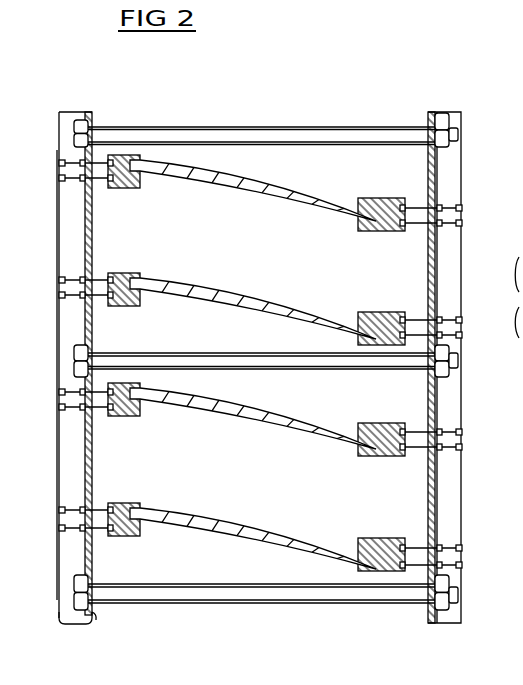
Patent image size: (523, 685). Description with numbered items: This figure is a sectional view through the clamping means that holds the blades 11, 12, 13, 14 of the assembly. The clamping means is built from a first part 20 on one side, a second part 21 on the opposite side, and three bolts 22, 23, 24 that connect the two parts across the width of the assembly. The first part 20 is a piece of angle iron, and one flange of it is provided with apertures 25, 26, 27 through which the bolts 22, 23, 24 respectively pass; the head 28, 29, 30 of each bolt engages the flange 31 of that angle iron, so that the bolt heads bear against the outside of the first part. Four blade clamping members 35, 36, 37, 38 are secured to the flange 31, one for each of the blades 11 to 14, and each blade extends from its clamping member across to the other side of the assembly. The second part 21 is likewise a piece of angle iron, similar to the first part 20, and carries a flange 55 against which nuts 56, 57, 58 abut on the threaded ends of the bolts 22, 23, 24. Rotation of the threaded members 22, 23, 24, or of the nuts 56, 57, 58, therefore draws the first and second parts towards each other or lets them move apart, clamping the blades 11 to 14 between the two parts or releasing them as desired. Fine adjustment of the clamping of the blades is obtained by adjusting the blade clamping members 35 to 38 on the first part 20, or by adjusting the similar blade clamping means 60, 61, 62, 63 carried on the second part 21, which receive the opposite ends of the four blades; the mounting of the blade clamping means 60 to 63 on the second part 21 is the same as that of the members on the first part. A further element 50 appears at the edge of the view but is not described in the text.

The blade 11 is at (234, 172).
The blade 12 is at (202, 284).
The blade 13 is at (207, 396).
The blade 14 is at (202, 519).
The first part 20 is at (73, 104).
The second part 21 is at (441, 104).
The bolt 22 is at (303, 127).
The bolt 23 is at (410, 370).
The bolt 24 is at (303, 603).
The aperture 25 is at (93, 147).
The aperture 26 is at (88, 338).
The aperture 27 is at (63, 622).
The bolt head 28 is at (72, 140).
The bolt head 29 is at (78, 377).
The bolt head 30 is at (72, 583).
The flange 31 is at (82, 208).
The blade clamping member 35 is at (98, 150).
The blade clamping member 36 is at (98, 266).
The blade clamping member 37 is at (97, 378).
The blade clamping member 38 is at (97, 500).
The adjacent assembly 50 is at (510, 274).
The flange 55 is at (435, 190).
The nut 56 is at (452, 114).
The nut 57 is at (445, 348).
The nut 58 is at (446, 578).
The blade clamping means 60 is at (385, 199).
The blade clamping means 61 is at (385, 313).
The blade clamping means 62 is at (393, 423).
The blade clamping means 63 is at (385, 539).